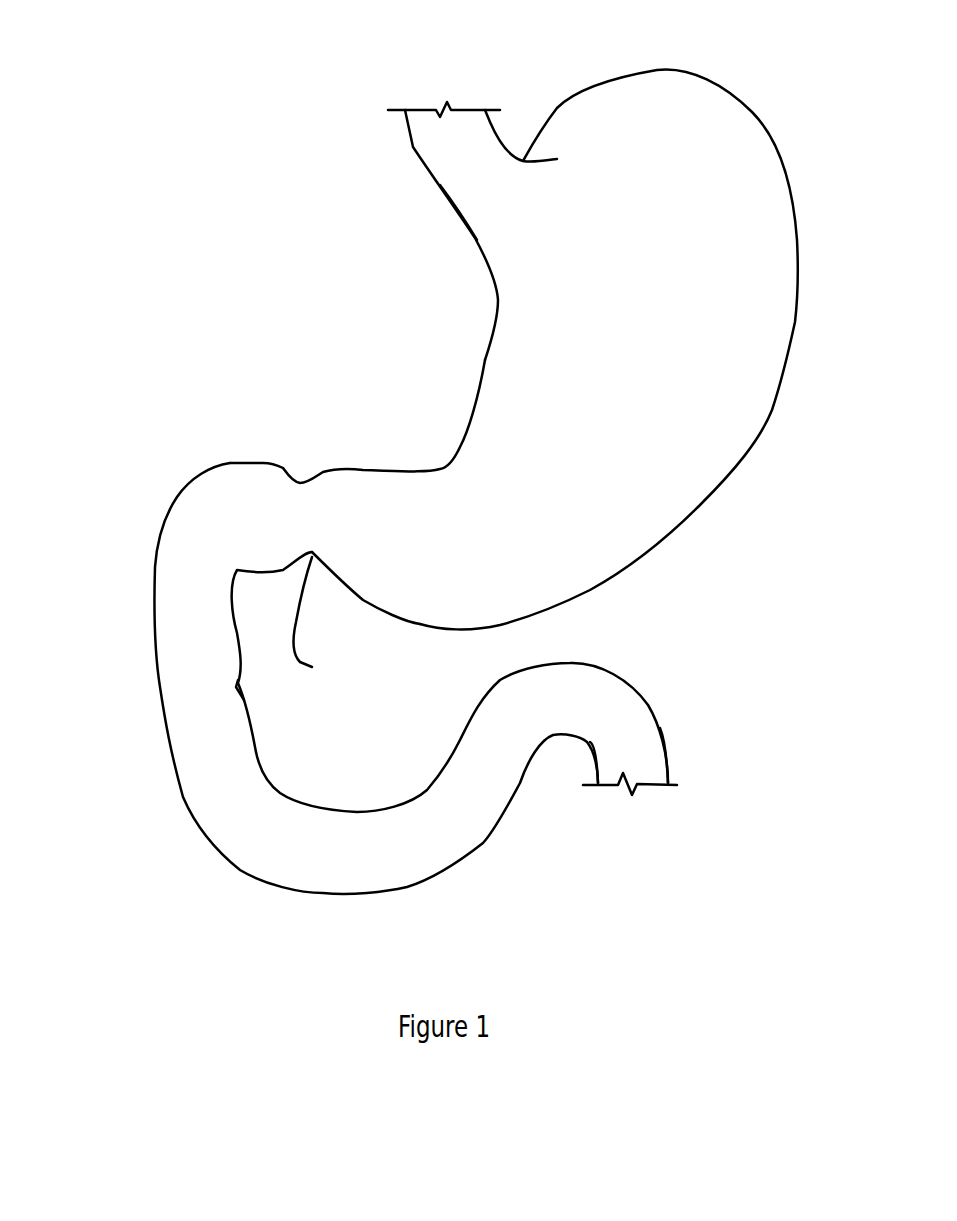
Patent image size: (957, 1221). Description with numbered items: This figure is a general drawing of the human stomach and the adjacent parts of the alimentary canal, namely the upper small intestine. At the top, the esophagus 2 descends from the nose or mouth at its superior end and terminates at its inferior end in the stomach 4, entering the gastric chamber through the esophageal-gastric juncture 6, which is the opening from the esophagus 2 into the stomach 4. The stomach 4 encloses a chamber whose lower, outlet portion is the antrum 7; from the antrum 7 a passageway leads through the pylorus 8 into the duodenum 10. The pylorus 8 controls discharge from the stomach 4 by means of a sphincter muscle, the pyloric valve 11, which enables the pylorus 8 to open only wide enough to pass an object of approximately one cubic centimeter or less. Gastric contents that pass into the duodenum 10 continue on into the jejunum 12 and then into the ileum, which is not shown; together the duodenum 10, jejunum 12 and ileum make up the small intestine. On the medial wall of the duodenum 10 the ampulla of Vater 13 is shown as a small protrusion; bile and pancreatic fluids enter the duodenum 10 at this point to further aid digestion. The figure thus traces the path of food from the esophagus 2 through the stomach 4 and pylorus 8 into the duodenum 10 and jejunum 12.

The esophagus 2 is at (443, 145).
The stomach 4 is at (797, 322).
The esophageal-gastric juncture 6 is at (503, 196).
The antrum 7 is at (469, 586).
The pylorus 8 is at (302, 512).
The duodenum 10 is at (183, 641).
The pyloric valve 11 is at (321, 621).
The jejunum 12 is at (653, 753).
The ampulla of Vater 13 is at (238, 684).